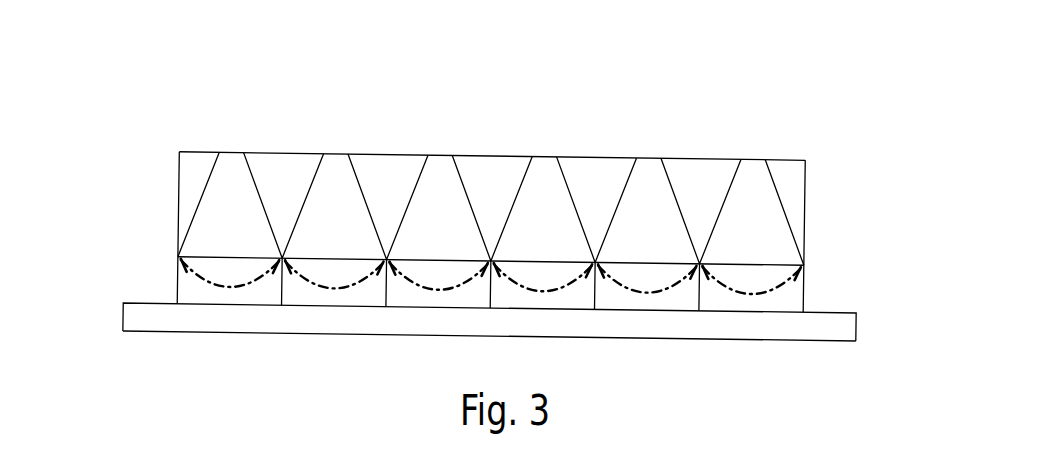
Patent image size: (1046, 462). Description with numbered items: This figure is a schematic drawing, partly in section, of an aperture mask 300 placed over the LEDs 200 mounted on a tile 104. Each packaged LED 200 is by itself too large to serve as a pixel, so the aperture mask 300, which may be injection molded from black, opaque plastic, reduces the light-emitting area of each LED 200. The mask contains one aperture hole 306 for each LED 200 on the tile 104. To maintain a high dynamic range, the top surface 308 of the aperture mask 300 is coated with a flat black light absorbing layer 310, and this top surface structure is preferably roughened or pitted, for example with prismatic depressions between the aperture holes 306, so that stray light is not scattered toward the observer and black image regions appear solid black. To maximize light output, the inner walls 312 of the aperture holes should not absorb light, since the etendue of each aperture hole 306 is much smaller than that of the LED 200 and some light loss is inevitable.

The tile 104 is at (98, 312).
The LED 200 is at (805, 290).
The aperture mask 300 is at (804, 203).
The aperture hole 306 is at (233, 152).
The top surface 308 is at (596, 157).
The light absorbing layer 310 is at (178, 148).
The inner walls 312 is at (352, 222).